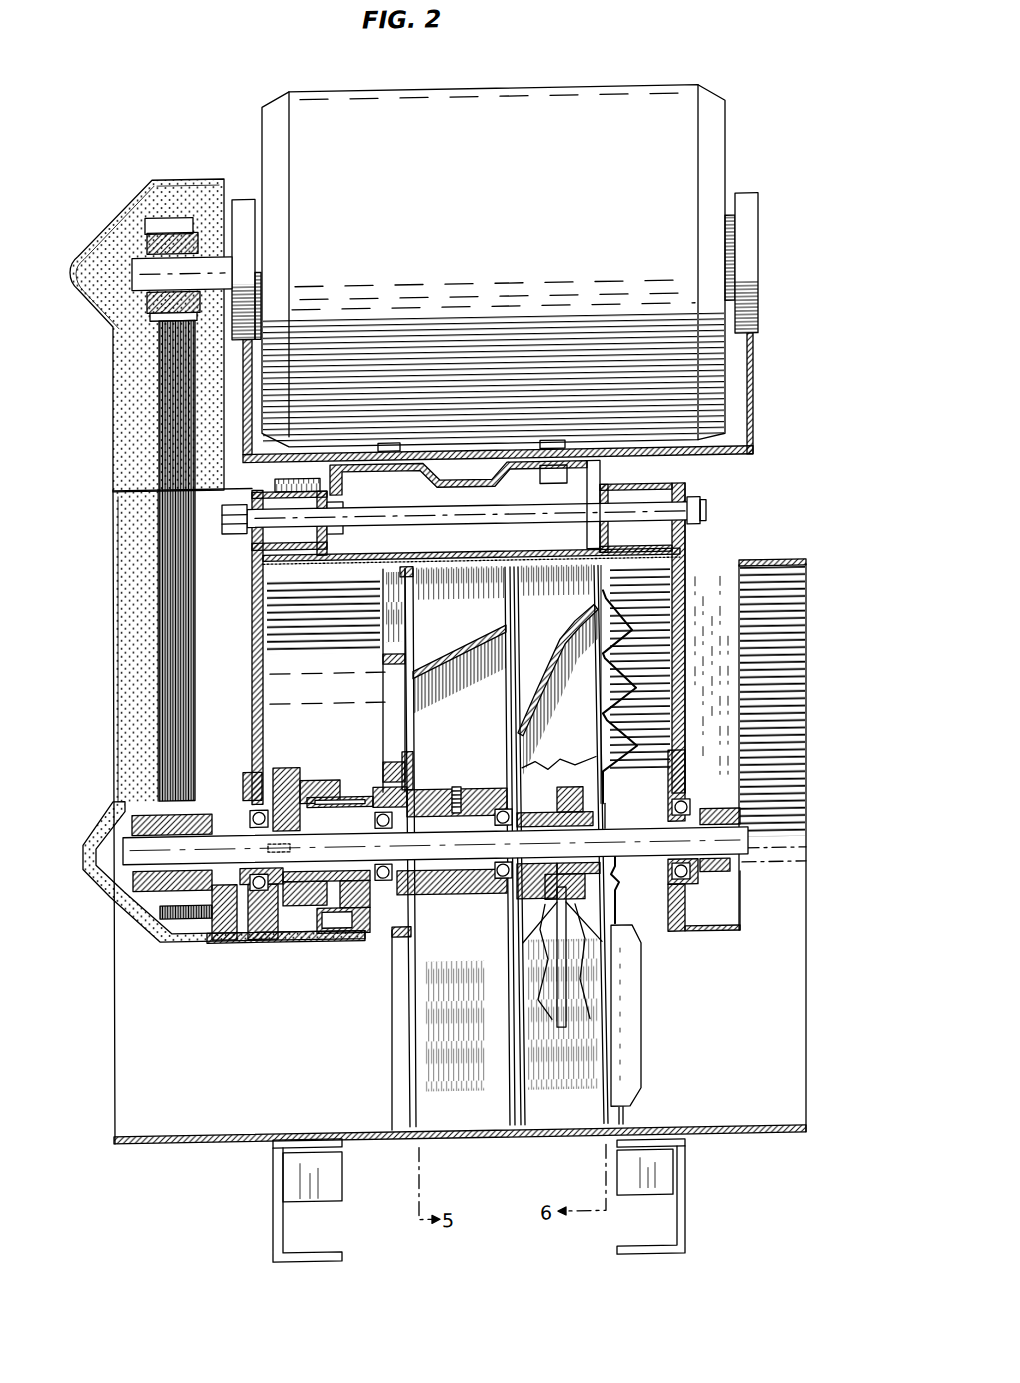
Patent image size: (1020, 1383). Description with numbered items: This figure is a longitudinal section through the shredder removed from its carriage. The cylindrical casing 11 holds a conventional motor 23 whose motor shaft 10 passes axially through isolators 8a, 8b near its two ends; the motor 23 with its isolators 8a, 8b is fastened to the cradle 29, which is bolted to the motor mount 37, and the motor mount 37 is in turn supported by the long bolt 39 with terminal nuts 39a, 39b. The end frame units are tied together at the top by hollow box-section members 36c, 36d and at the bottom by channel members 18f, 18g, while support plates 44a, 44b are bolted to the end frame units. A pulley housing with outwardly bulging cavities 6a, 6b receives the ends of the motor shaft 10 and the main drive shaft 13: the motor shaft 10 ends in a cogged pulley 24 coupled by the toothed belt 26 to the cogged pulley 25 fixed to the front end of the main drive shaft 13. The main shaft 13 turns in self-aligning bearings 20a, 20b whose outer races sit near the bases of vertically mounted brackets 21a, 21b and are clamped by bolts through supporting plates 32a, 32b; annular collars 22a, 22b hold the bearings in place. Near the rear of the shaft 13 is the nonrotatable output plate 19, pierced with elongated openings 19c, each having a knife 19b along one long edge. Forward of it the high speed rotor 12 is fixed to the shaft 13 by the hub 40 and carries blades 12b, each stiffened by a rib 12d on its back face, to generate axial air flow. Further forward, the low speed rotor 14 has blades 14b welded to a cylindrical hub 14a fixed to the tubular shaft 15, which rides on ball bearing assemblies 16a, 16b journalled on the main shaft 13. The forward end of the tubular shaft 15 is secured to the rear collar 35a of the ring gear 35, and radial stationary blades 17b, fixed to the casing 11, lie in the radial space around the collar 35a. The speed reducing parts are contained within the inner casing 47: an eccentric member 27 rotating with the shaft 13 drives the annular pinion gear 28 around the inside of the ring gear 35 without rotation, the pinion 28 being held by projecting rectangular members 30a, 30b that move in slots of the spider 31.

The outwardly bulging cavity 6a is at (123, 210).
The outwardly bulging cavity 6b is at (93, 818).
The isolator 8a is at (245, 210).
The isolator 8b is at (752, 249).
The motor shaft 10 is at (128, 262).
The cylindrical casing 11 is at (135, 1030).
The high speed rotor 12 is at (572, 1098).
The blades 12b is at (560, 648).
The stiffening metal ribs 12d is at (568, 1010).
The main drive shaft 13 is at (742, 842).
The low speed rotor 14 is at (470, 1098).
The cylindrical hub 14a is at (455, 1013).
The blades 14b is at (455, 658).
The tubular shaft 15 is at (495, 800).
The ball bearing assembly 16a is at (425, 892).
The ball bearing assembly 16b is at (490, 893).
The radial stationary blades 17b is at (400, 1016).
The steel channel member 18f is at (273, 1212).
The steel channel member 18g is at (686, 1202).
The output plate 19 is at (620, 880).
The knife 19b is at (640, 1027).
The elongated openings 19c is at (612, 690).
The self-aligning bearing 20a is at (248, 928).
The self-aligning bearing 20b is at (705, 806).
The vertically mounted bracket 21a is at (258, 668).
The vertically mounted bracket 21b is at (680, 700).
The annular collar 22a is at (246, 820).
The annular collar 22b is at (738, 884).
The motor 23 is at (513, 112).
The cogged pulley 24 is at (150, 298).
The cogged pulley 25 is at (130, 876).
The toothed belt 26 is at (160, 524).
The eccentric member 27 is at (308, 829).
The annular pinion gear 28 is at (325, 790).
The cradle 29 is at (753, 359).
The projecting rectangular member 30a is at (310, 775).
The projecting rectangular member 30b is at (315, 922).
The spider 31 is at (290, 928).
The supporting plate 32a is at (258, 761).
The supporting plate 32b is at (660, 772).
The ring gear 35 is at (385, 795).
The rear collar 35a is at (445, 785).
The hollow steel member 36c is at (332, 532).
The hollow steel member 36d is at (650, 483).
The motor mount 37 is at (478, 477).
The long bolt 39 is at (503, 512).
The terminal nut 39a is at (226, 525).
The terminal nut 39b is at (706, 516).
The hub 40 is at (535, 812).
The support plate 44a is at (258, 640).
The support plate 44b is at (692, 559).
The inner casing 47 is at (368, 785).